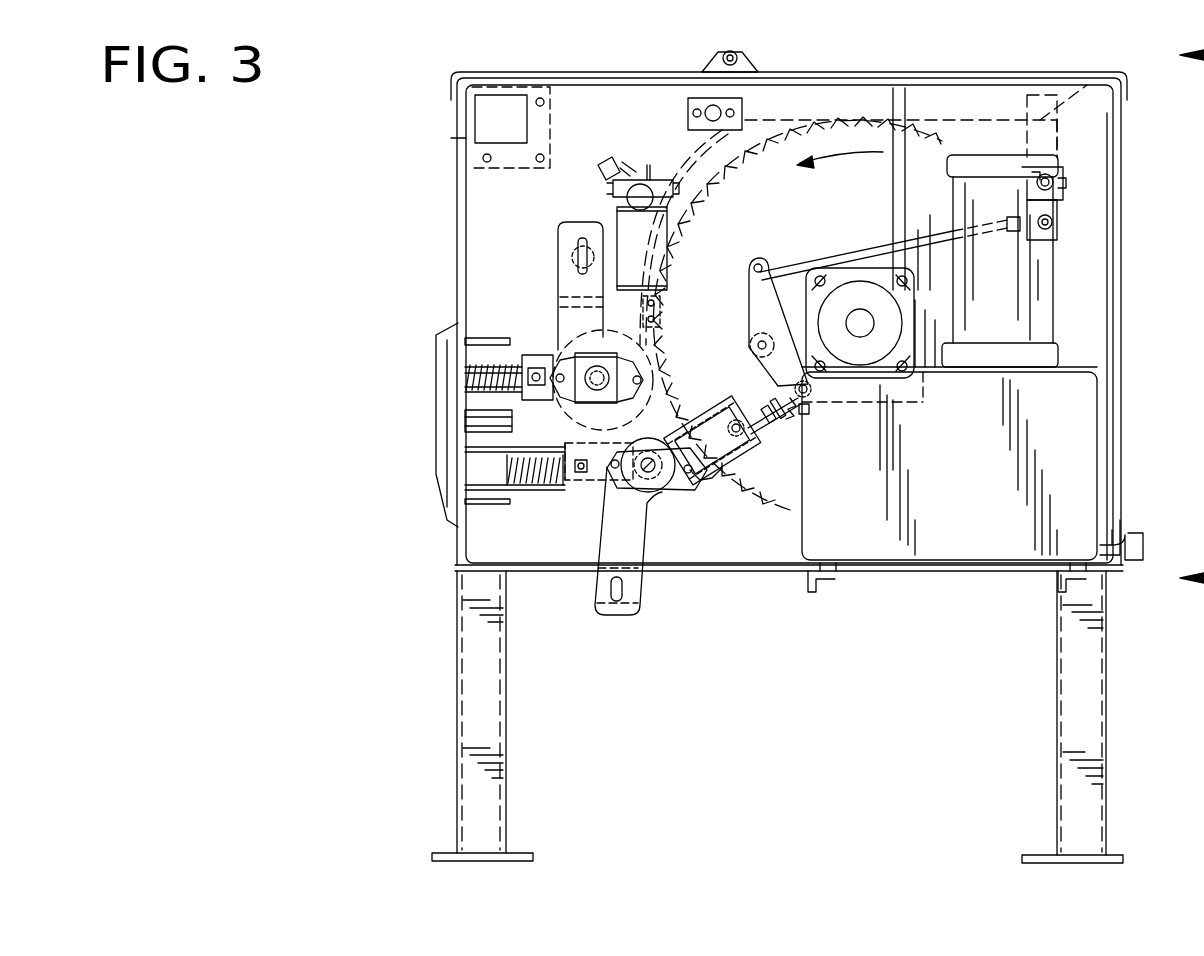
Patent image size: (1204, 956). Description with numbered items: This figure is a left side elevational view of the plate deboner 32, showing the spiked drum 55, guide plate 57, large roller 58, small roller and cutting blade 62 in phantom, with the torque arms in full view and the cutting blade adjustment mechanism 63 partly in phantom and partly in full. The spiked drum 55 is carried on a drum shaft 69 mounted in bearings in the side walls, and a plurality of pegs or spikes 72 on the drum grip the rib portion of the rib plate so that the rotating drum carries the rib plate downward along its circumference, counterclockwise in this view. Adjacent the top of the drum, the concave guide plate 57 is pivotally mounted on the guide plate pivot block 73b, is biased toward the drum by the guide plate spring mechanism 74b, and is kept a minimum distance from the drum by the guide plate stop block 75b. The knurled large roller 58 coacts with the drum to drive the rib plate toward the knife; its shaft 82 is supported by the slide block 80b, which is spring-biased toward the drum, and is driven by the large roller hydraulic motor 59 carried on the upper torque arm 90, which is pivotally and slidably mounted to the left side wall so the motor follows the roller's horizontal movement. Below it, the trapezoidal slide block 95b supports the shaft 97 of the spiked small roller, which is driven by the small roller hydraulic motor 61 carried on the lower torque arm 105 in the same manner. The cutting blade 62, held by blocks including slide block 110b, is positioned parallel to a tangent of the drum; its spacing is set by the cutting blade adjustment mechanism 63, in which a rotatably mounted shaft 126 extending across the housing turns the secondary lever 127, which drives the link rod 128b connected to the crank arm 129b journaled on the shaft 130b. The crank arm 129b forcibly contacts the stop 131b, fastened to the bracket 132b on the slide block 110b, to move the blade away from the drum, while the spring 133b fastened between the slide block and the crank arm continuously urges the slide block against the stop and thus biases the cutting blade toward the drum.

The plate deboner 32 is at (340, 341).
The spiked drum 55 is at (836, 148).
The guide plate 57 is at (688, 158).
The knurled large roller 58 is at (575, 355).
The large roller hydraulic motor 59 is at (580, 372).
The small roller hydraulic motor 61 is at (655, 493).
The cutting blade 62 is at (703, 486).
The cutting blade adjustment mechanism 63 is at (1066, 121).
The drum shaft 69 is at (858, 302).
The pegs or spikes 72 is at (912, 138).
The guide plate pivot block 73b is at (688, 114).
The guide plate spring mechanism 74b is at (603, 170).
The guide plate stop block 75b is at (643, 320).
The slide block 80b is at (556, 362).
The shaft of the knurled large roller 82 is at (592, 386).
The upper torque arm 90 is at (568, 241).
The slide block 95b is at (576, 481).
The shaft of the spiked small roller 97 is at (640, 473).
The lower torque arm 105 is at (620, 550).
The slide block 110b is at (708, 488).
The shaft 126 is at (1060, 182).
The secondary lever 127 is at (1034, 208).
The link rod 128b is at (934, 238).
The crank arm 129b is at (757, 300).
The shaft 130b is at (758, 345).
The stop 131b is at (787, 422).
The bracket 132b is at (760, 452).
The spring 133b is at (803, 396).